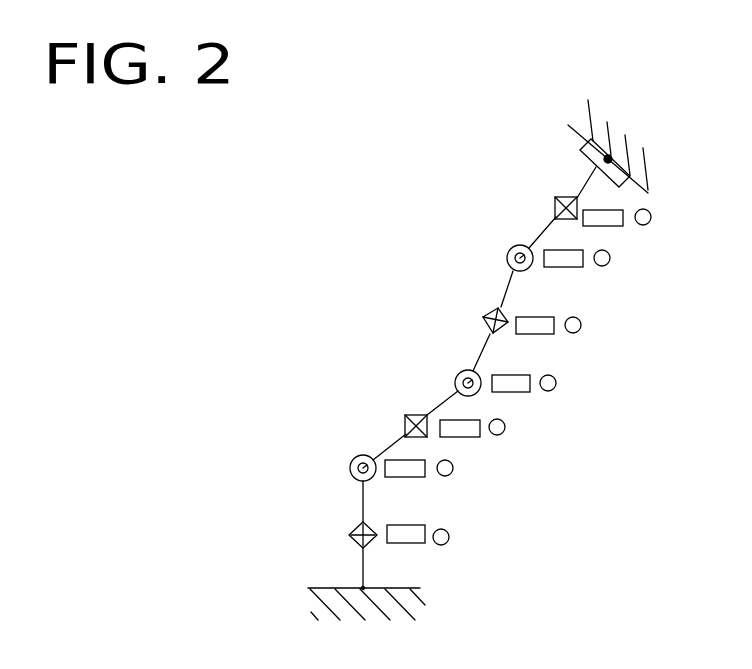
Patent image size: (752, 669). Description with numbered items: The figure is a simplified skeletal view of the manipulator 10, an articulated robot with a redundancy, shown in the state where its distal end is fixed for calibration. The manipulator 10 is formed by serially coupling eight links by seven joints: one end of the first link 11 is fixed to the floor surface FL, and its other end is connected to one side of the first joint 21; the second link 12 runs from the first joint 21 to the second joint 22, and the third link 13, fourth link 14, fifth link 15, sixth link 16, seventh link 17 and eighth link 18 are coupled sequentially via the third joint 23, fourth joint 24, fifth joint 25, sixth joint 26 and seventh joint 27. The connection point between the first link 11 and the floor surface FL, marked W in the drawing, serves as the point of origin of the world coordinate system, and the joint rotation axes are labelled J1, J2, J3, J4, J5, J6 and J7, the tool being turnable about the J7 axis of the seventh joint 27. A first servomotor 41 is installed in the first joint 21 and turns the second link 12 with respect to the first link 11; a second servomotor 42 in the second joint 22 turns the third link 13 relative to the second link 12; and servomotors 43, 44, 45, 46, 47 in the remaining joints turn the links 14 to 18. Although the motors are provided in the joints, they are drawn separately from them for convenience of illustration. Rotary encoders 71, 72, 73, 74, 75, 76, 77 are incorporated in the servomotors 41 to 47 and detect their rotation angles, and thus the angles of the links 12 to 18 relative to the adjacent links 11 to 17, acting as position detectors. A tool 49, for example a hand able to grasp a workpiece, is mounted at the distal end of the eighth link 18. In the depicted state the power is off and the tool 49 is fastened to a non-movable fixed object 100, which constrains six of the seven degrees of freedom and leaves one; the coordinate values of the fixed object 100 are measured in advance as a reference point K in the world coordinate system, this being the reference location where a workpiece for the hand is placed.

The manipulator 10 is at (340, 230).
The first link 11 is at (362, 565).
The second link 12 is at (362, 495).
The third link 13 is at (387, 446).
The fourth link 14 is at (450, 400).
The fifth link 15 is at (480, 354).
The sixth link 16 is at (507, 290).
The seventh link 17 is at (540, 238).
The eighth link 18 is at (589, 177).
The first joint 21 is at (358, 524).
The second joint 22 is at (354, 457).
The third joint 23 is at (420, 413).
The fourth joint 24 is at (459, 373).
The fifth joint 25 is at (490, 308).
The sixth joint 26 is at (511, 248).
The seventh joint 27 is at (554, 204).
The first servomotor 41 is at (403, 543).
The second servomotor 42 is at (403, 477).
The servomotor 43 is at (458, 437).
The servomotor 44 is at (520, 392).
The servomotor 45 is at (533, 334).
The servomotor 46 is at (560, 267).
The servomotor 47 is at (600, 226).
The tool 49 is at (582, 157).
The rotary encoder 71 is at (449, 540).
The rotary encoder 72 is at (453, 471).
The rotary encoder 73 is at (505, 430).
The rotary encoder 74 is at (556, 385).
The rotary encoder 75 is at (581, 330).
The rotary encoder 76 is at (610, 262).
The rotary encoder 77 is at (652, 220).
The fixed object 100 is at (573, 124).
The reference point K is at (612, 155).
The world coordinate origin W is at (375, 574).
The floor surface FL is at (308, 588).
The first joint axis J1 is at (348, 538).
The second joint axis J2 is at (350, 468).
The third joint axis J3 is at (404, 424).
The fourth joint axis J4 is at (455, 384).
The fifth joint axis J5 is at (482, 322).
The sixth joint axis J6 is at (507, 258).
The J7 axis J7 is at (553, 209).